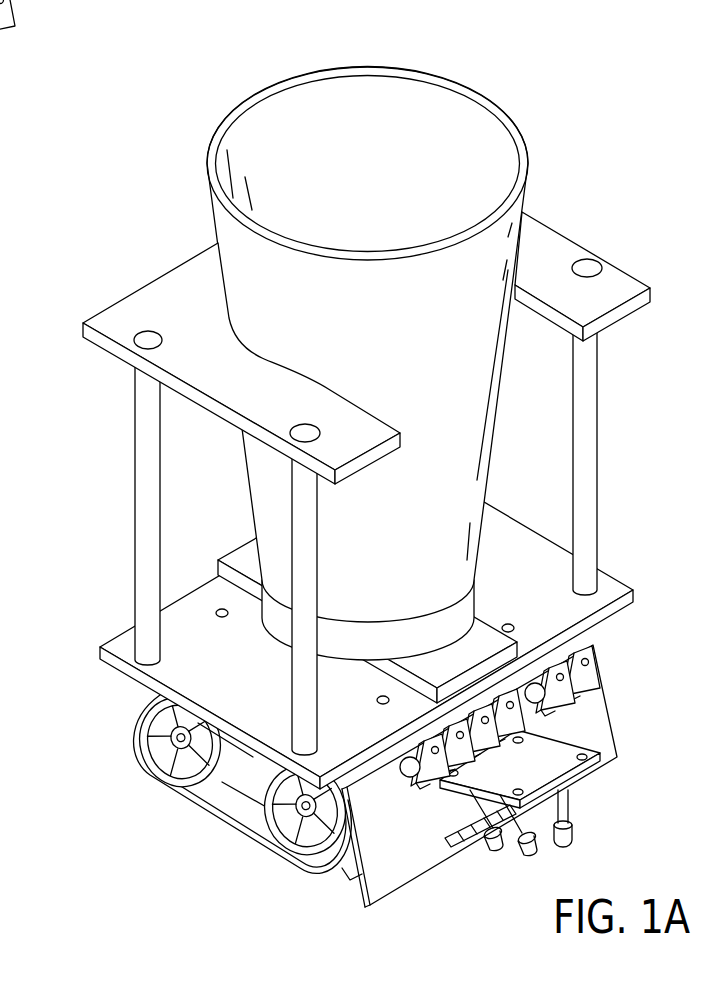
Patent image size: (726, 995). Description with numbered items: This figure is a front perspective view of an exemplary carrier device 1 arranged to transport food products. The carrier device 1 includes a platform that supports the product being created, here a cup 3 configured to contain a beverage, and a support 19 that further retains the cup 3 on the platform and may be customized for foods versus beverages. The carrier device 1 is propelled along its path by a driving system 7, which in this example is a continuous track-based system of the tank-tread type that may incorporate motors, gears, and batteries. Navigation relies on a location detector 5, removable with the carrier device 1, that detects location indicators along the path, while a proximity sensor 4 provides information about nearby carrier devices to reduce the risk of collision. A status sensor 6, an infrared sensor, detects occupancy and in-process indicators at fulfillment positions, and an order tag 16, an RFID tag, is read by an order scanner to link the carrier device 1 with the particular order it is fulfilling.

The carrier device 1 is at (209, 800).
The cup 3 is at (493, 104).
The proximity sensor 4 is at (405, 756).
The location detector 5 is at (580, 733).
The status sensor 6 is at (537, 683).
The driving system 7 is at (358, 868).
The order tag 16 is at (503, 663).
The support 19 is at (637, 274).